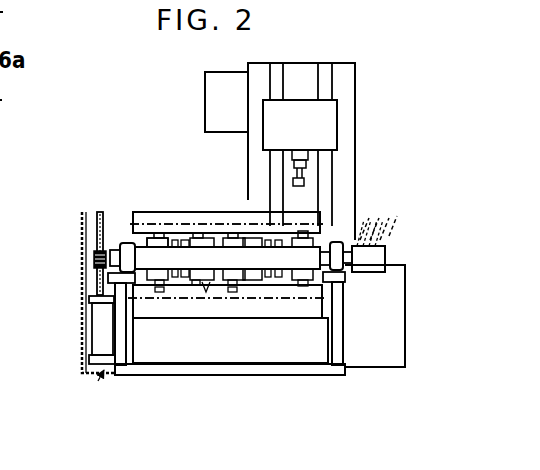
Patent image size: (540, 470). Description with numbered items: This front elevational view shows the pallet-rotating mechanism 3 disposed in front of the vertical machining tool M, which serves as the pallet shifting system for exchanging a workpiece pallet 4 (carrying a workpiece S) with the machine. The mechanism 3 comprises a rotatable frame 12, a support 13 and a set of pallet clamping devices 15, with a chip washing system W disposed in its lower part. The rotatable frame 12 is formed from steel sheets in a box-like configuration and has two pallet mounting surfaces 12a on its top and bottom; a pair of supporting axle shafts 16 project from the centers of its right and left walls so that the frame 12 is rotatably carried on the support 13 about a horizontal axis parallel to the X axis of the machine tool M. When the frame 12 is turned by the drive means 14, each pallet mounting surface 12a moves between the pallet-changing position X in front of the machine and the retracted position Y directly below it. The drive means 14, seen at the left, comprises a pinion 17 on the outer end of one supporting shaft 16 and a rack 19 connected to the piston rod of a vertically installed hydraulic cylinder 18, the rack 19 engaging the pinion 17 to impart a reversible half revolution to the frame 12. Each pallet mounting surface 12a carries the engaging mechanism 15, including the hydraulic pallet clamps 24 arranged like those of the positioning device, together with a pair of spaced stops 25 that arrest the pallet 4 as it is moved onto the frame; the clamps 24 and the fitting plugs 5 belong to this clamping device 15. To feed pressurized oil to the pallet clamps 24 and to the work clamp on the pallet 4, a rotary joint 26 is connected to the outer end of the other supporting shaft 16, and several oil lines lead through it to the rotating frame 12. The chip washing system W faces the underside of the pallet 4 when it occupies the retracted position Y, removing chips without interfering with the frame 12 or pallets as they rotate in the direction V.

The vertical machining tool M is at (358, 127).
The rotatable frame 12 is at (213, 258).
The pallet mounting surfaces 12a is at (226, 261).
The pallet-changing position X is at (208, 233).
The retracted position Y is at (277, 299).
The supporting axle shafts 16 is at (130, 243).
The rotary joint 26 is at (366, 274).
The pallet-rotating mechanism 3 is at (171, 231).
The workpiece S is at (157, 242).
The workpiece pallet 4 is at (177, 168).
The clamp 5 is at (255, 345).
The hydraulic pallet clamps 24 is at (154, 290).
The pallet clamping devices 15 is at (216, 421).
The drive means 14 is at (33, 212).
The rack 19 is at (98, 220).
The pinion 17 is at (97, 258).
The hydraulic cylinder 18 is at (98, 316).
The support 13 is at (117, 322).
The chip washing system W is at (248, 377).
The stops 25 is at (253, 284).
The vertical direction V is at (191, 202).